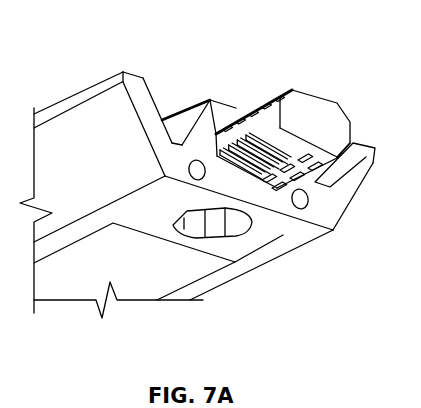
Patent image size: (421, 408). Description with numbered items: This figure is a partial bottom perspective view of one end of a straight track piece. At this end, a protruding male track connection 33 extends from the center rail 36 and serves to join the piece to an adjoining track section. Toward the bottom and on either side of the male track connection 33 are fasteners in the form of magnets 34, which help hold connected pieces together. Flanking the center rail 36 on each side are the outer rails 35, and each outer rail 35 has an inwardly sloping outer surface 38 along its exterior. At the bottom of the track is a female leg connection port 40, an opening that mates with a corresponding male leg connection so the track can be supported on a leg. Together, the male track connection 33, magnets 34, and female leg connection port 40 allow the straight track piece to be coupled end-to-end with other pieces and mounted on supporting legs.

The male track connection 33 is at (307, 113).
The magnets 34 is at (190, 168).
The outer rails 35 is at (133, 72).
The center rail 36 is at (222, 96).
The inwardly sloping outer surfaces 38 is at (75, 128).
The female leg connection port 40 is at (222, 232).